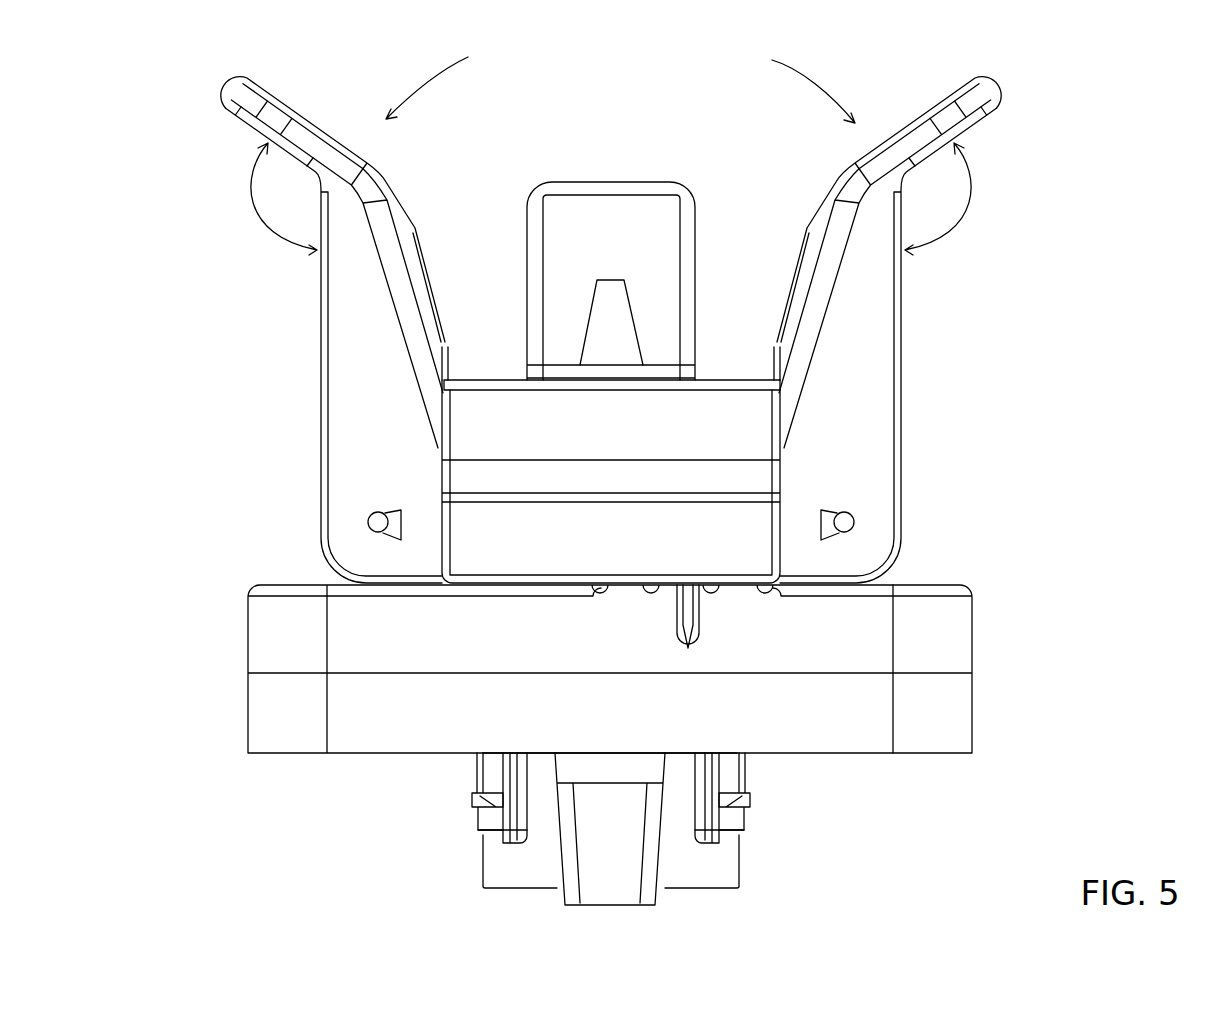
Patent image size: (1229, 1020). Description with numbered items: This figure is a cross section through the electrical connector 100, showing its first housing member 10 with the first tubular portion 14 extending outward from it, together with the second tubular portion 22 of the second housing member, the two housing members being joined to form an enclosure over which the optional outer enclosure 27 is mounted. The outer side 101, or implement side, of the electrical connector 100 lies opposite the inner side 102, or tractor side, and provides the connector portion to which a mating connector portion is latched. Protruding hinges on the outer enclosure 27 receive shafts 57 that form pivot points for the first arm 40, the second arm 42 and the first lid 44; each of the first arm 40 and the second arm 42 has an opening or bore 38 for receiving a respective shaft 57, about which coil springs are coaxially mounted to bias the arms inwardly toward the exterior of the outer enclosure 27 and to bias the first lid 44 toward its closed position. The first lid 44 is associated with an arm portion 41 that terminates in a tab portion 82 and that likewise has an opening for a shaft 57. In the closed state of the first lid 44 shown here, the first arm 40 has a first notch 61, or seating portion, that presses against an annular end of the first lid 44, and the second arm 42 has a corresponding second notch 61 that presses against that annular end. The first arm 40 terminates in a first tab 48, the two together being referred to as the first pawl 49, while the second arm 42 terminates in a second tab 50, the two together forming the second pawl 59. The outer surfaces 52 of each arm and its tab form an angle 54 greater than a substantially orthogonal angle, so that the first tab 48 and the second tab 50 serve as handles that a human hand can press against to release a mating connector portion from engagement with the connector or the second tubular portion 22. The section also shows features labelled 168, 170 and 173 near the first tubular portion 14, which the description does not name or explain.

The first housing member 10 is at (938, 708).
The first tubular portion 14 is at (677, 872).
The second tubular portion 22 is at (595, 545).
The outer enclosure 27 is at (870, 632).
The opening or bore 38 is at (378, 512).
The first arm 40 is at (904, 452).
The arm portion 41 is at (657, 349).
The second arm 42 is at (318, 349).
The first lid 44 is at (712, 382).
The first tab 48 is at (984, 87).
The first pawl 49 is at (799, 81).
The second tab 50 is at (311, 111).
The outer surfaces 52 is at (233, 118).
The angle 54 is at (252, 216).
The shaft 57 is at (380, 513).
The second pawl 59 is at (445, 79).
The notch 61 is at (447, 392).
The tab portion 82 is at (622, 217).
The electrical connector 100 is at (1072, 336).
The outer side 101 is at (877, 745).
The inner side 102 is at (946, 590).
The clip 168 is at (427, 787).
The clip arm 170 is at (481, 814).
The clip foot 173 is at (510, 840).